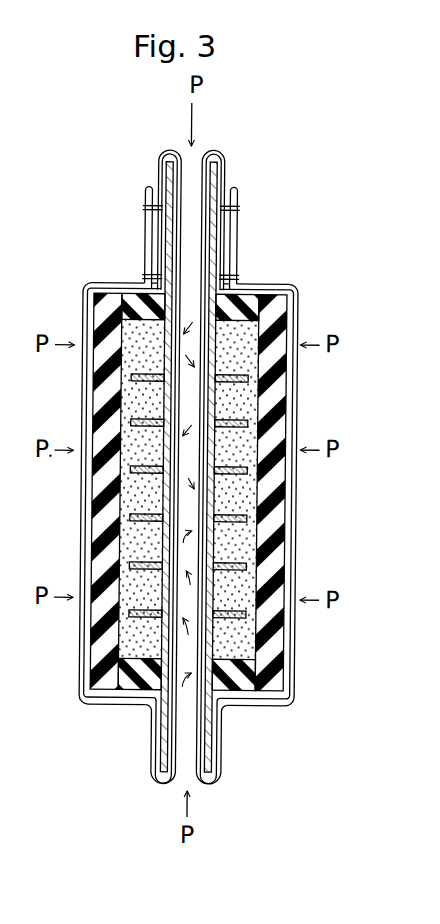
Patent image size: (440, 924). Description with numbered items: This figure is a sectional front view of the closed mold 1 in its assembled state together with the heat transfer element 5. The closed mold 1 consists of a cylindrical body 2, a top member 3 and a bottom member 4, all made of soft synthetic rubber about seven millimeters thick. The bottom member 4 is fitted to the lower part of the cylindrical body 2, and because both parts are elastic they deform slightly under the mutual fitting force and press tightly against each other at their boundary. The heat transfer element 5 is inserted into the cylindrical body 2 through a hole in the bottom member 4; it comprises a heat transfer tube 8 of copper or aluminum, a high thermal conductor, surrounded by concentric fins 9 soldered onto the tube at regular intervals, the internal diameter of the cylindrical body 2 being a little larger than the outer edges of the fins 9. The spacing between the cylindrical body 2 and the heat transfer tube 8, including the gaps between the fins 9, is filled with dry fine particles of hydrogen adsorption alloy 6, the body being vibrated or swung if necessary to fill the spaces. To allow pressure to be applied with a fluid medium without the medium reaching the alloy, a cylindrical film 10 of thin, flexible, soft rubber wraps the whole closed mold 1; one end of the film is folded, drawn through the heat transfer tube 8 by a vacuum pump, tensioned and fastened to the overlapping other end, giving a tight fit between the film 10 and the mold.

The closed mold 1 is at (286, 321).
The cylindrical body 2 is at (277, 387).
The top member 3 is at (231, 302).
The bottom member 4 is at (247, 689).
The heat transfer element 5 is at (216, 755).
The hydrogen adsorption alloy 6 is at (240, 550).
The heat transfer tube 8 is at (132, 364).
The fins 9 is at (130, 514).
The cylindrical film 10 is at (220, 160).